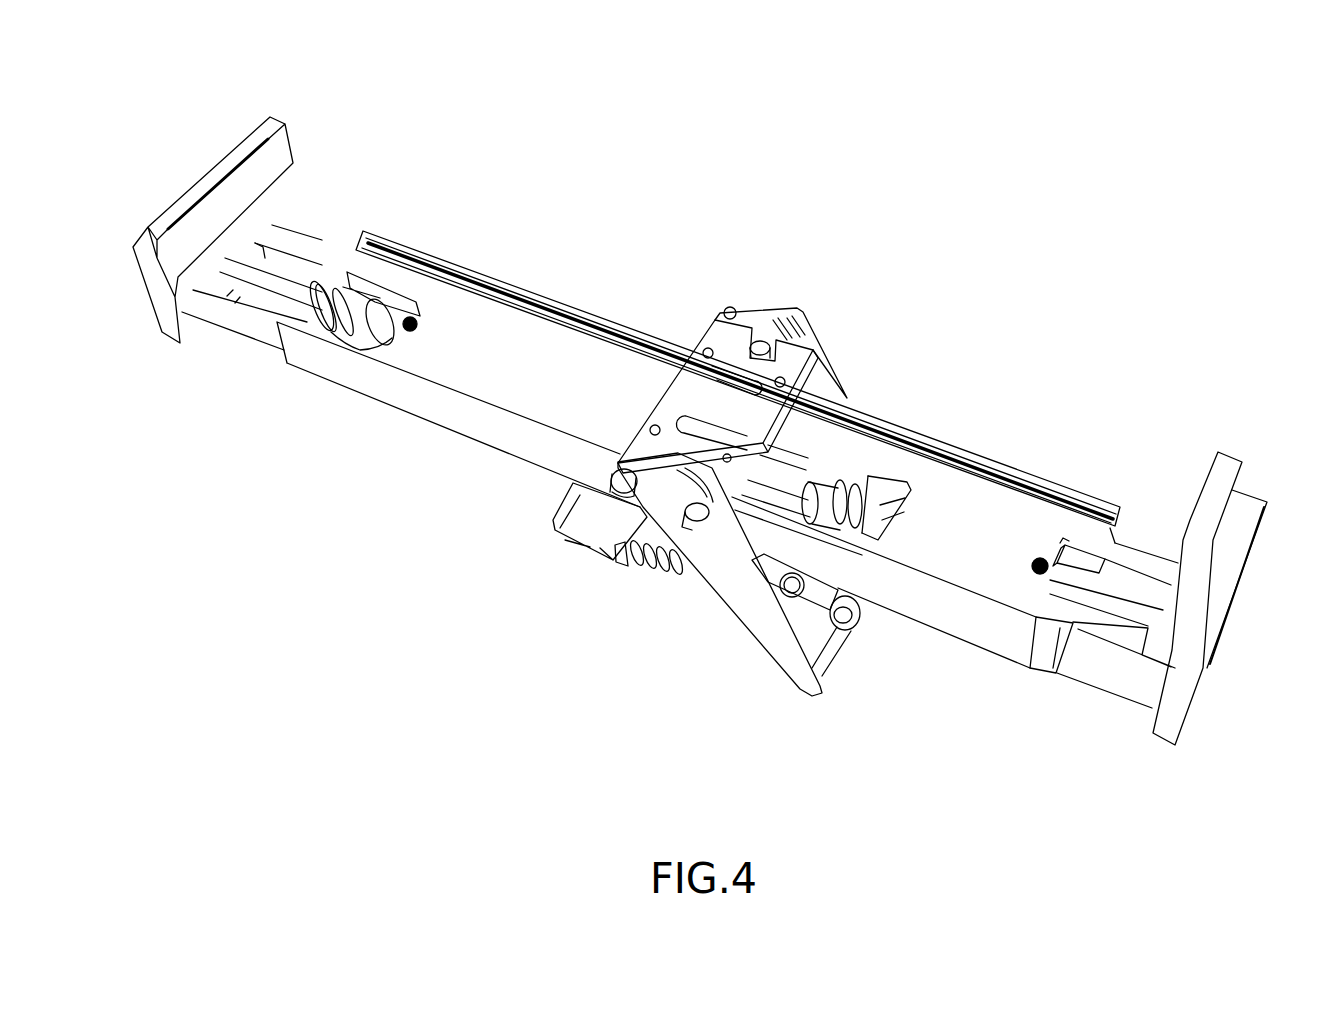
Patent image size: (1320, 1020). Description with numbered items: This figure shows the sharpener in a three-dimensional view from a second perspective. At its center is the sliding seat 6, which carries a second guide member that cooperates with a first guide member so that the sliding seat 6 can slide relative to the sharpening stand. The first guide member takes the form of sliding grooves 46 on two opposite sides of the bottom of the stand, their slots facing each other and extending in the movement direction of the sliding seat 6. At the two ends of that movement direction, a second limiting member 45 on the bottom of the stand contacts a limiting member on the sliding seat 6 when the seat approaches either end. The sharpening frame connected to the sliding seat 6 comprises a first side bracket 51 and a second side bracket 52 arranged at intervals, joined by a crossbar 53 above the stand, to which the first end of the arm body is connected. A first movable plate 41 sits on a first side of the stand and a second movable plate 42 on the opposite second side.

The first movable plate 41 is at (1226, 457).
The second movable plate 42 is at (263, 152).
The second limiting member 45 is at (409, 331).
The sliding grooves 46 is at (378, 252).
The sliding seat 6 is at (687, 402).
The first side bracket 51 is at (840, 377).
The second side bracket 52 is at (742, 580).
The crossbar 53 is at (858, 618).